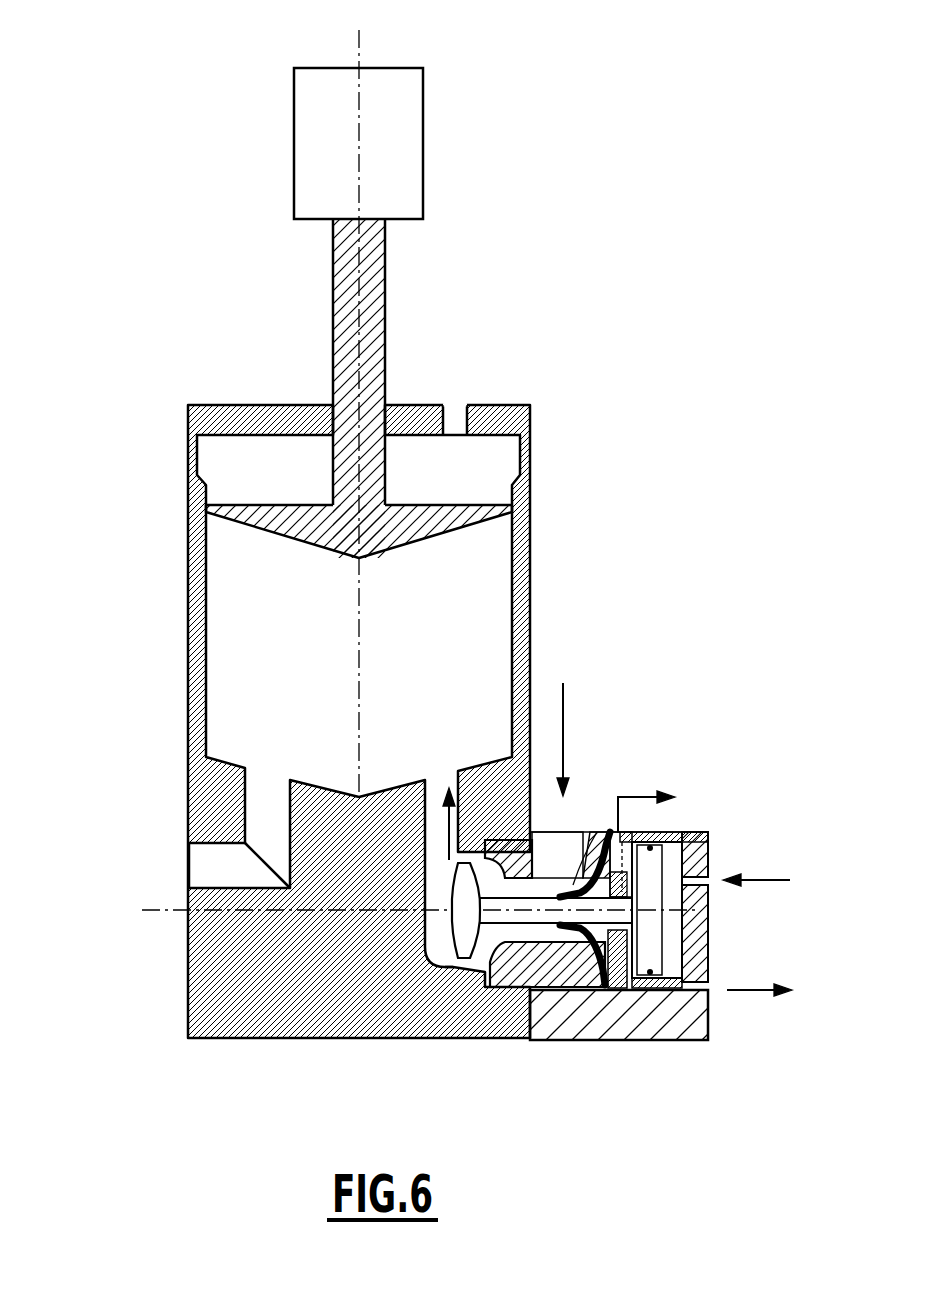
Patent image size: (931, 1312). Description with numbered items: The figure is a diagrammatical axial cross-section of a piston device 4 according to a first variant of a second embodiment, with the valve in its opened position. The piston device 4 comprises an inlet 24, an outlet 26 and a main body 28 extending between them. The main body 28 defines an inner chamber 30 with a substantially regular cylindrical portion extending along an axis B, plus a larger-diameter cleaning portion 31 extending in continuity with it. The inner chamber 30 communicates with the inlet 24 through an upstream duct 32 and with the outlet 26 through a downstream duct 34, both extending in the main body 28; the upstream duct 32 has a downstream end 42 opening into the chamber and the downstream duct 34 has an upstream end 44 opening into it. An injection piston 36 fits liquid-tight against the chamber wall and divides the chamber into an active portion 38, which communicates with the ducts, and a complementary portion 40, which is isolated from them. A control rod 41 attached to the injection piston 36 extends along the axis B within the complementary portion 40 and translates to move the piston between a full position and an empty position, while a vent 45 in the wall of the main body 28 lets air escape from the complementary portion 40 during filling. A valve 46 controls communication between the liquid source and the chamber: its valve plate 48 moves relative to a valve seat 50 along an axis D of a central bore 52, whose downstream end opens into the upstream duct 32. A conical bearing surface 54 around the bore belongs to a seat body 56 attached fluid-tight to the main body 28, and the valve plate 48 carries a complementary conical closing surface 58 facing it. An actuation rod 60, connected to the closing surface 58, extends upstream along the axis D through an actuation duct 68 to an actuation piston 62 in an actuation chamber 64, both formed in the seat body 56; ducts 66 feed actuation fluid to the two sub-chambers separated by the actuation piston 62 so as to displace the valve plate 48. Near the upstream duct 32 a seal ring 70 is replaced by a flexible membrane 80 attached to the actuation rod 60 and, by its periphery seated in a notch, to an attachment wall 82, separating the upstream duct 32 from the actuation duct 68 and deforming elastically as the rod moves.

The piston device 4 is at (170, 1077).
The inlet 24 is at (587, 833).
The outlet 26 is at (210, 863).
The main body 28 is at (520, 580).
The inner chamber 30 is at (222, 592).
The cleaning portion 31 is at (226, 459).
The upstream duct 32 is at (463, 787).
The downstream duct 34 is at (267, 827).
The injection piston 36 is at (465, 520).
The active portion 38 is at (477, 623).
The complementary portion 40 is at (463, 477).
The control rod 41 is at (345, 318).
The downstream end 42 is at (440, 793).
The upstream end 44 is at (265, 788).
The vent 45 is at (455, 423).
The valve 46 is at (447, 968).
The valve plate 48 is at (464, 930).
The valve seat 50 is at (515, 980).
The central bore 52 is at (580, 967).
The bearing surface 54 is at (568, 847).
The seat body 56 is at (693, 860).
The closing surface 58 is at (510, 830).
The actuation rod 60 is at (613, 903).
The actuation piston 62 is at (650, 945).
The actuation chamber 64 is at (673, 862).
The ducts 66 is at (703, 883).
The actuation duct 68 is at (612, 967).
The seal ring 70 is at (642, 844).
The flexible membrane 80 is at (602, 837).
The attachment wall 82 is at (608, 833).
The axis B is at (360, 47).
The axis D is at (158, 912).